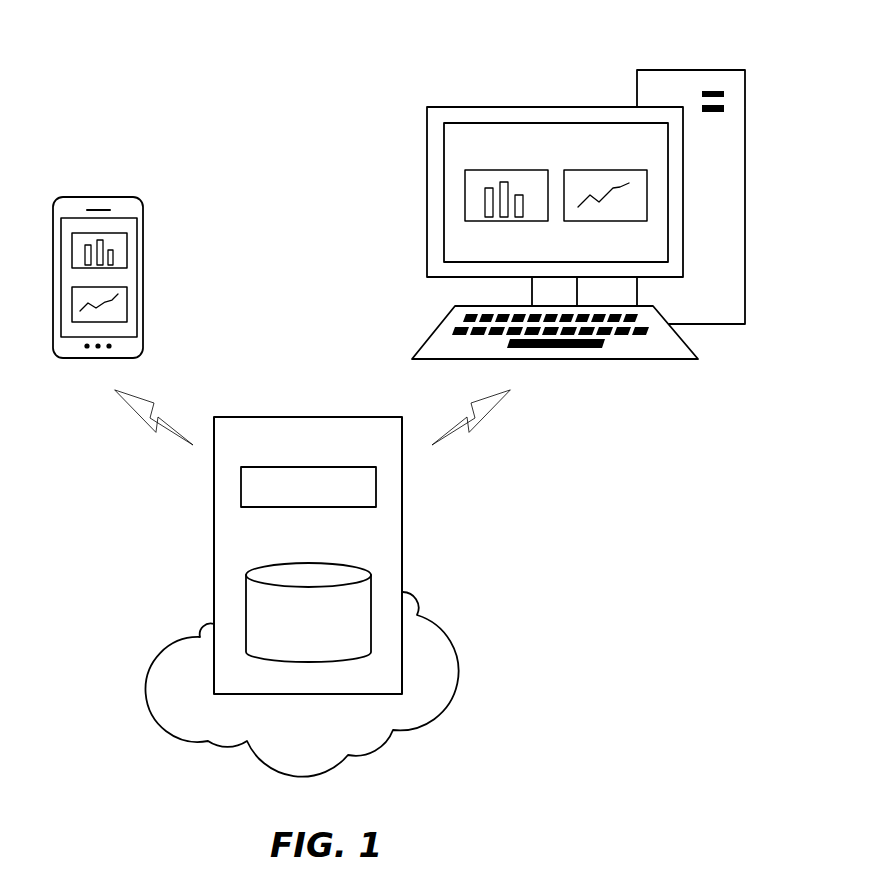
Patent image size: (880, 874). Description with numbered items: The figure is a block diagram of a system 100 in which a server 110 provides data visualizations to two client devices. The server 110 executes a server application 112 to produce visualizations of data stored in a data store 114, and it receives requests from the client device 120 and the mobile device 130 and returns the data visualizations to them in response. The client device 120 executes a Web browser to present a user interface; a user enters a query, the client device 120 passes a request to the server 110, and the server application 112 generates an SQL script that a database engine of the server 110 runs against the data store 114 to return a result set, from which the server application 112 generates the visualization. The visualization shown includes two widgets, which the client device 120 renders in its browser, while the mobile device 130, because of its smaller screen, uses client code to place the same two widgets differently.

The system 100 is at (99, 40).
The server 110 is at (298, 417).
The server application 112 is at (308, 487).
The data store 114 is at (324, 563).
The client device 120 is at (562, 107).
The mobile device 130 is at (111, 197).